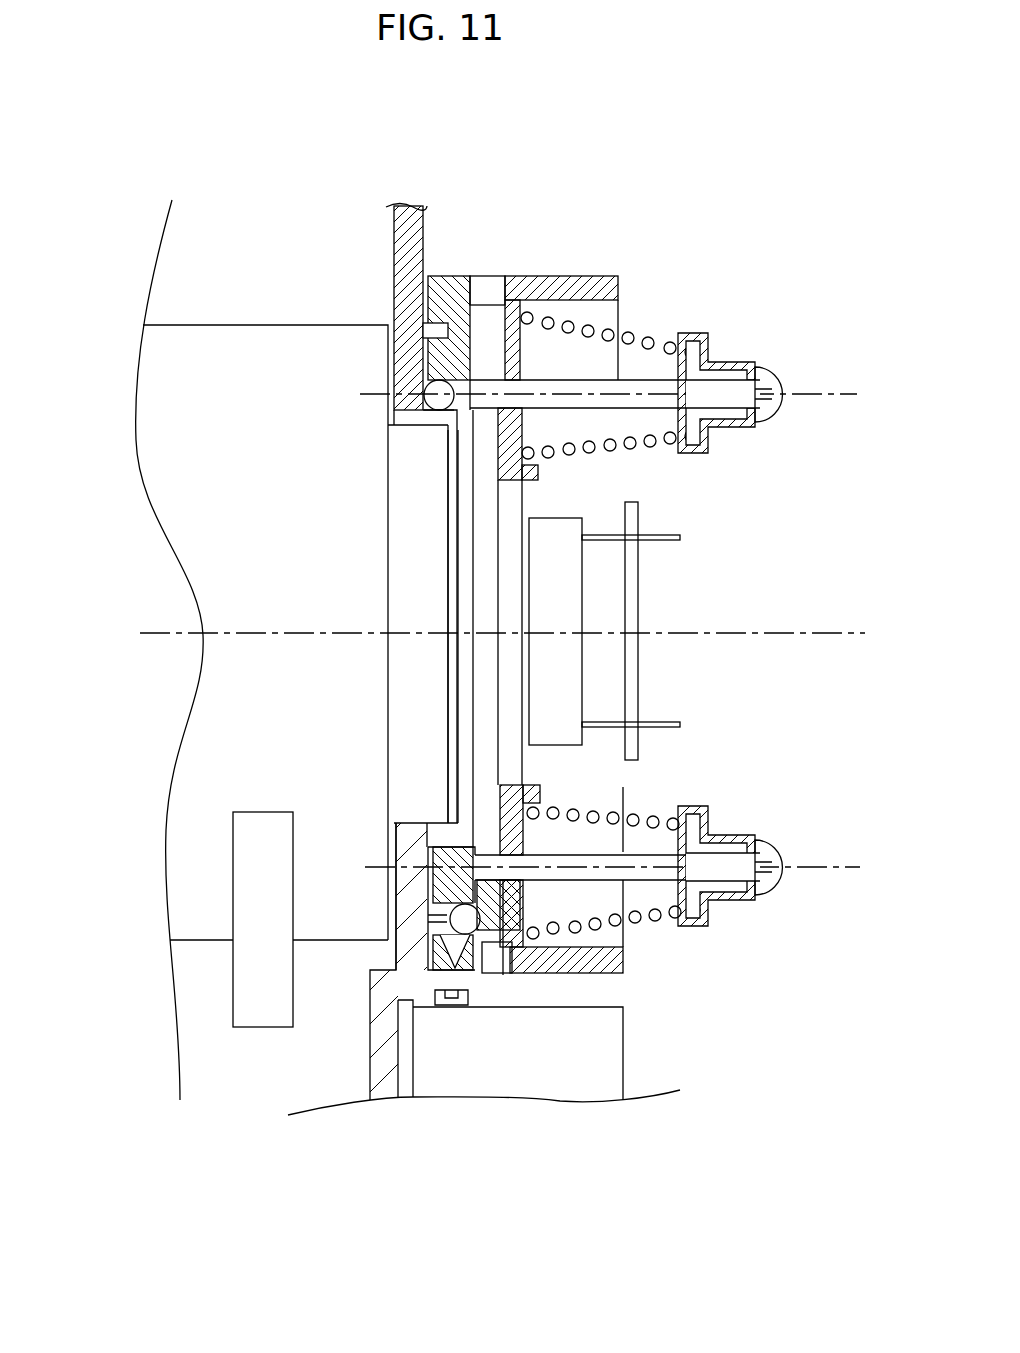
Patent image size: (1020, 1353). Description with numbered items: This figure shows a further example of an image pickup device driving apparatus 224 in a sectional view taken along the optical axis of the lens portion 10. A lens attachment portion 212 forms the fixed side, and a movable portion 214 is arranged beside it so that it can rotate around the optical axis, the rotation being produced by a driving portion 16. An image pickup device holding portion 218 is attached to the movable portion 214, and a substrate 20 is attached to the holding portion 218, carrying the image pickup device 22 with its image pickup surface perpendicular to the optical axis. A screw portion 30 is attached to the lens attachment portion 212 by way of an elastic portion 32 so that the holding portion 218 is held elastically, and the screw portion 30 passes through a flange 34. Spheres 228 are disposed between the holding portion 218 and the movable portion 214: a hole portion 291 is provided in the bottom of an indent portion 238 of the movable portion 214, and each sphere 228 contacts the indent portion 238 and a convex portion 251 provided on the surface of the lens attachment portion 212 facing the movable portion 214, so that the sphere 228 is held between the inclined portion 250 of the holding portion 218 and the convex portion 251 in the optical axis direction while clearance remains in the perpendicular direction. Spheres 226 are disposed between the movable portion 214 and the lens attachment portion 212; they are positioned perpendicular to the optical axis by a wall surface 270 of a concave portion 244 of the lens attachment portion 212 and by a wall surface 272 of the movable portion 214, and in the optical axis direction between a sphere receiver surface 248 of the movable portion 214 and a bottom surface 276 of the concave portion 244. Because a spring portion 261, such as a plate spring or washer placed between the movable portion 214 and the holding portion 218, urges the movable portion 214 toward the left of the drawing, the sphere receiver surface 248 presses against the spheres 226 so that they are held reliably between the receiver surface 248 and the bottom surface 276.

The lens portion 10 is at (190, 325).
The driving portion 16 is at (625, 1053).
The substrate 20 is at (640, 600).
The image pickup device 22 is at (583, 707).
The screw portion 30 is at (775, 374).
The elastic portion 32 is at (632, 450).
The flange 34 is at (708, 338).
The lens attachment portion 212 is at (411, 218).
The movable portion 214 is at (448, 285).
The image pickup device holding portion 218 is at (553, 278).
The image pickup device driving apparatus 224 is at (470, 1135).
The spheres 226 is at (425, 392).
The spheres 228 is at (478, 930).
The indent portion 238 is at (448, 962).
The concave portion 244 is at (433, 405).
The sphere receiver surface 248 is at (472, 382).
The inclined portion 250 is at (495, 960).
The convex portion 251 is at (428, 905).
The spring portion 261 is at (488, 278).
The wall surface 270 is at (440, 408).
The wall surface 272 is at (428, 385).
The bottom surface 276 is at (430, 402).
The hole portion 291 is at (435, 990).